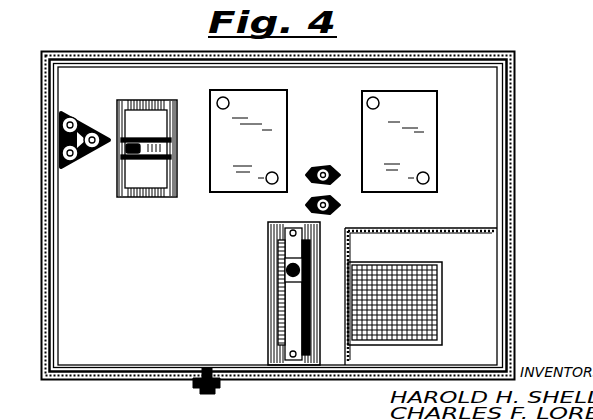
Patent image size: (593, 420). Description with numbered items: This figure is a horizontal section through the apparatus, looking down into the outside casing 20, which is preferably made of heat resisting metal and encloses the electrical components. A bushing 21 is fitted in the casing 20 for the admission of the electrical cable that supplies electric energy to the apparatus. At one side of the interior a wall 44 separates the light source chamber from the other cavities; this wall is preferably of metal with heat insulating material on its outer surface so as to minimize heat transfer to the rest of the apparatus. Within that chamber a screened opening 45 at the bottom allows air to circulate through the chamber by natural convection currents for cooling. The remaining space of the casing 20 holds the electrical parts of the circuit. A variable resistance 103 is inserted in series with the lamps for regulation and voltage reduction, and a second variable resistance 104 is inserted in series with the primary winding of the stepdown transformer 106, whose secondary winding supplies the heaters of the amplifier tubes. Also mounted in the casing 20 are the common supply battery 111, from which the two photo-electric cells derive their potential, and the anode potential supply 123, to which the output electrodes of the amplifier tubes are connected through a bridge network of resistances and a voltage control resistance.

The outside casing 20 is at (515, 170).
The bushing 21 is at (200, 392).
The wall 44 is at (437, 228).
The screened opening 45 is at (425, 315).
The variable resistance 103 is at (95, 163).
The variable resistance 104 is at (313, 202).
The stepdown transformer 106 is at (146, 168).
The common supply battery 111 is at (248, 141).
The anode potential supply 123 is at (418, 142).